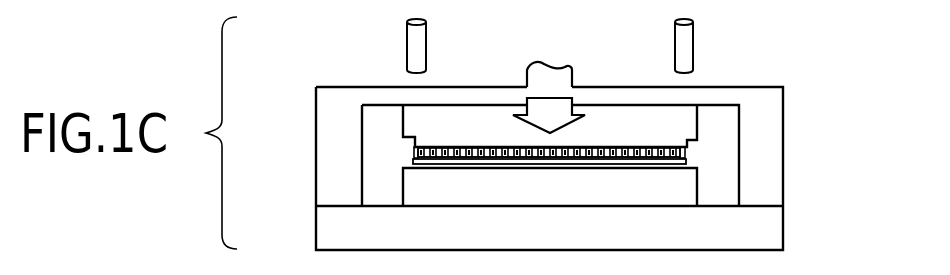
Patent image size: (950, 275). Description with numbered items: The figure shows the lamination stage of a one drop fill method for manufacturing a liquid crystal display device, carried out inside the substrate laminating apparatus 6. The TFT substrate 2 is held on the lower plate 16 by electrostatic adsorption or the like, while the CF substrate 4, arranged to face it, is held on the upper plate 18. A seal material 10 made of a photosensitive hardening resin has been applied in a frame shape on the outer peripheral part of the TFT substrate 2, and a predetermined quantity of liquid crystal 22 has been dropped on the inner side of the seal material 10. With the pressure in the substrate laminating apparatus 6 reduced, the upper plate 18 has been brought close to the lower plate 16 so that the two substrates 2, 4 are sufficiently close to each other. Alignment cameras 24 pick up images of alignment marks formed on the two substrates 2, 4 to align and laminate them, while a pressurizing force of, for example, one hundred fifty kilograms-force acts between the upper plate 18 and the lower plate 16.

The TFT substrate 2 is at (412, 162).
The CF substrate 4 is at (415, 142).
The substrate laminating apparatus 6 is at (808, 83).
The seal material 10 is at (428, 160).
The lower plate 16 is at (410, 199).
The upper plate 18 is at (403, 118).
The liquid crystal 22 is at (600, 165).
The alignment cameras 24 is at (427, 43).